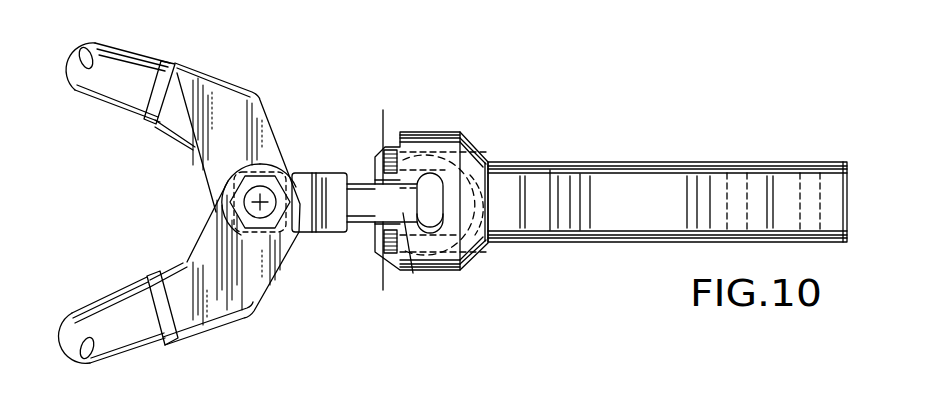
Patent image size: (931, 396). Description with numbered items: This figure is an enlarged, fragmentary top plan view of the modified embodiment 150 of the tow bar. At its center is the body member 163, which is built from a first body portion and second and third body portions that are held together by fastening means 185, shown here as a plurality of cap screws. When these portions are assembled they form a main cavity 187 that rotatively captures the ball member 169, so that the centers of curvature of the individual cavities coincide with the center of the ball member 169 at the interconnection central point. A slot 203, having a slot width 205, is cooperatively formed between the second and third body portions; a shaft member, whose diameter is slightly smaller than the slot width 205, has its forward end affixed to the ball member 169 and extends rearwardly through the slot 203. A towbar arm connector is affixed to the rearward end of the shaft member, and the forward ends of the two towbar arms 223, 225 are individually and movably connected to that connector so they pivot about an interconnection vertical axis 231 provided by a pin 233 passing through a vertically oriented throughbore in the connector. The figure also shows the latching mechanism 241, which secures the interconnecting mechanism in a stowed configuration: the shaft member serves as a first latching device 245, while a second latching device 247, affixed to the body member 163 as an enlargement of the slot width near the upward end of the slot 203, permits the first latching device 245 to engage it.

The modified embodiment 150 is at (400, 116).
The towbar arm 223 is at (110, 88).
The towbar arm 225 is at (123, 320).
The interconnection vertical axis 231 is at (250, 212).
The pin 233 is at (245, 230).
The first latching device 245 is at (363, 213).
The slot width 205 is at (383, 112).
The body member 163 is at (471, 237).
The fastening means 185 is at (383, 150).
The ball member 169 is at (413, 147).
The second latching device 247 is at (433, 177).
The slot 203 is at (400, 187).
The main cavity 187 is at (462, 250).
The latching mechanism 241 is at (458, 170).